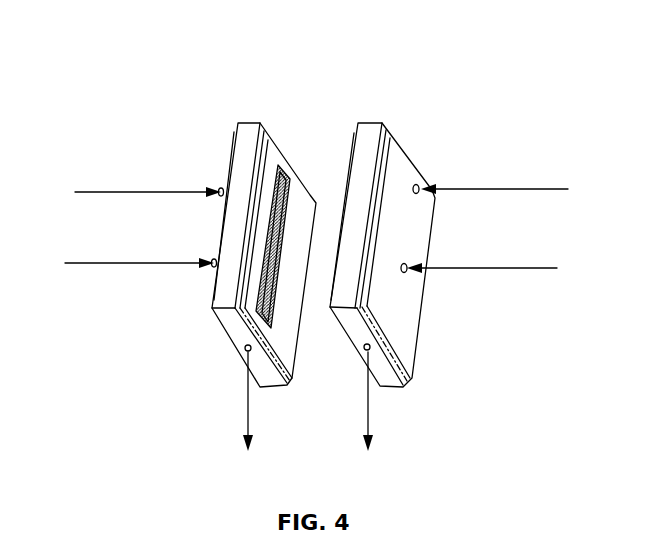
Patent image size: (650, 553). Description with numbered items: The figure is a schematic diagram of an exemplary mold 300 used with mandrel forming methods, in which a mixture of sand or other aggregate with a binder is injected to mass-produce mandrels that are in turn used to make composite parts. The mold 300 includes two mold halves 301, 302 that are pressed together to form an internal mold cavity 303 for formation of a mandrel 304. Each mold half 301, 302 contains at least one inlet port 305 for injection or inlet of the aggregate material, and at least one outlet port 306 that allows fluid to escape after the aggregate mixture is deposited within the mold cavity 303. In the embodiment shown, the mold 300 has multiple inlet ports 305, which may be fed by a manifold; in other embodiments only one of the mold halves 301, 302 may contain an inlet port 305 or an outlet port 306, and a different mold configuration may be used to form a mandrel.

The mold 300 is at (132, 35).
The mold half 301 is at (245, 103).
The mold half 302 is at (373, 93).
The internal mold cavity 303 is at (284, 292).
The mandrel 304 is at (290, 197).
The inlet port 305 is at (218, 188).
The outlet port 306 is at (245, 351).